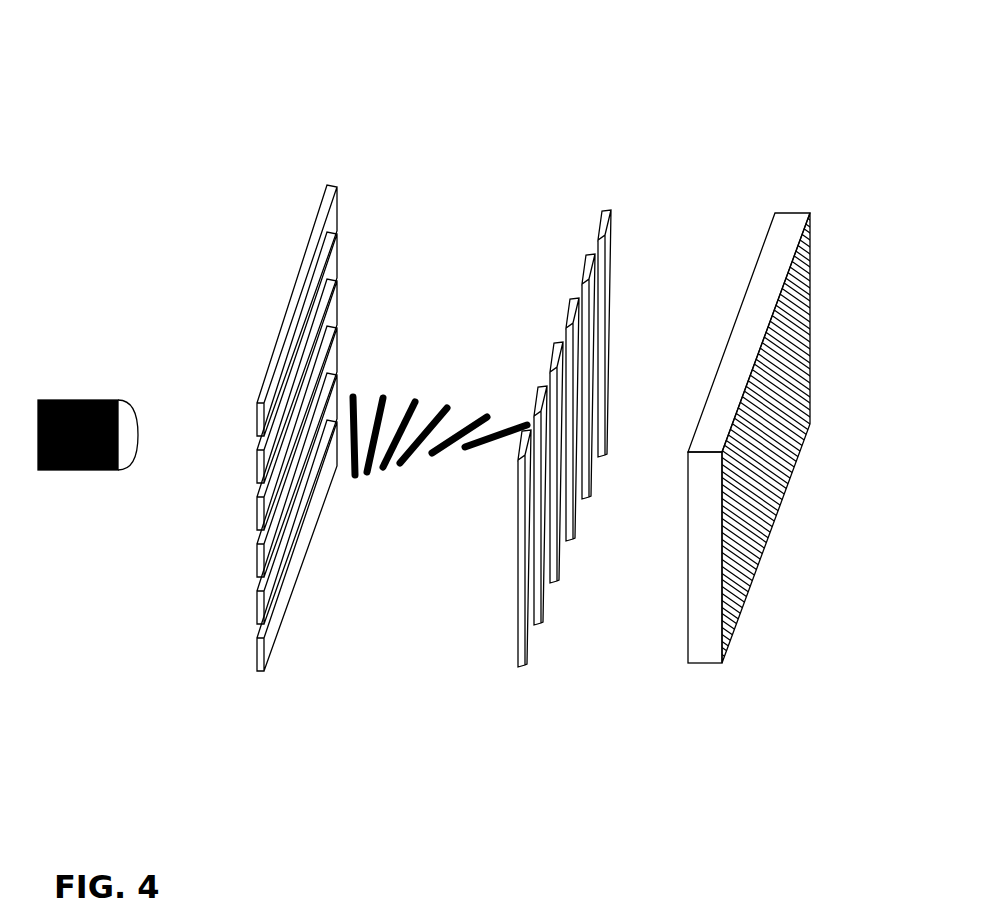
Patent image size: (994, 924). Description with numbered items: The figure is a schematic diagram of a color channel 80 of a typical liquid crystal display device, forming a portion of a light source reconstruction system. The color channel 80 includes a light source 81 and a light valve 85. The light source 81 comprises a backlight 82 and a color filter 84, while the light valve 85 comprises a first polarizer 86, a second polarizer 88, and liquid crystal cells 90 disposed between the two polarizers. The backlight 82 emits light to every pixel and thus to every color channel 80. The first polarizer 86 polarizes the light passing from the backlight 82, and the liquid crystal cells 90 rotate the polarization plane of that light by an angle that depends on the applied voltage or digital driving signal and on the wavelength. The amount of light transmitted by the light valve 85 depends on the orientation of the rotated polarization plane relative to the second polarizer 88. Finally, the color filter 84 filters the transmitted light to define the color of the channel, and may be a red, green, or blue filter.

The color channel 80 is at (145, 88).
The light source 81 is at (101, 368).
The backlight 82 is at (92, 400).
The color filter 84 is at (797, 505).
The light valve 85 is at (617, 698).
The first polarizer 86 is at (240, 583).
The second polarizer 88 is at (497, 585).
The liquid crystal cells 90 is at (404, 382).